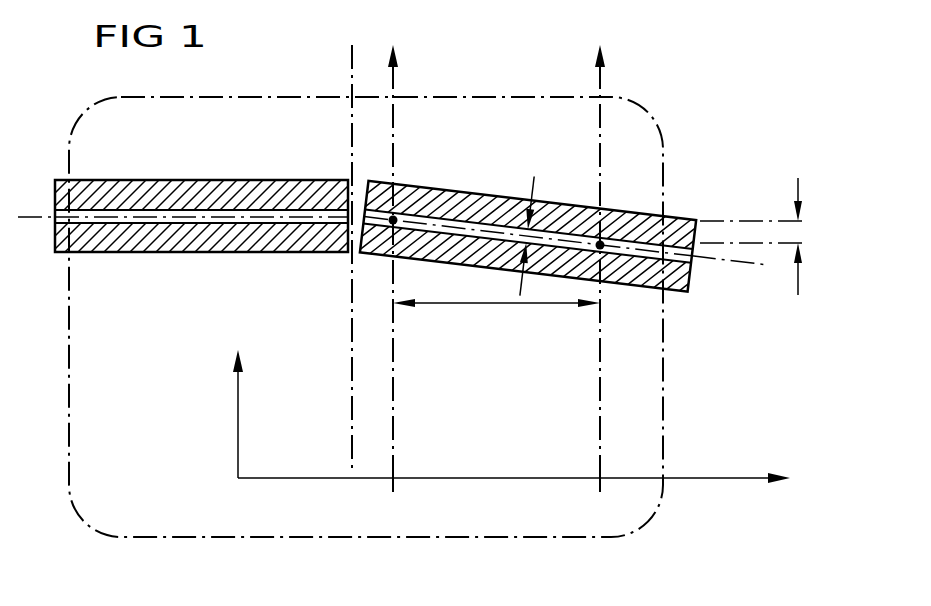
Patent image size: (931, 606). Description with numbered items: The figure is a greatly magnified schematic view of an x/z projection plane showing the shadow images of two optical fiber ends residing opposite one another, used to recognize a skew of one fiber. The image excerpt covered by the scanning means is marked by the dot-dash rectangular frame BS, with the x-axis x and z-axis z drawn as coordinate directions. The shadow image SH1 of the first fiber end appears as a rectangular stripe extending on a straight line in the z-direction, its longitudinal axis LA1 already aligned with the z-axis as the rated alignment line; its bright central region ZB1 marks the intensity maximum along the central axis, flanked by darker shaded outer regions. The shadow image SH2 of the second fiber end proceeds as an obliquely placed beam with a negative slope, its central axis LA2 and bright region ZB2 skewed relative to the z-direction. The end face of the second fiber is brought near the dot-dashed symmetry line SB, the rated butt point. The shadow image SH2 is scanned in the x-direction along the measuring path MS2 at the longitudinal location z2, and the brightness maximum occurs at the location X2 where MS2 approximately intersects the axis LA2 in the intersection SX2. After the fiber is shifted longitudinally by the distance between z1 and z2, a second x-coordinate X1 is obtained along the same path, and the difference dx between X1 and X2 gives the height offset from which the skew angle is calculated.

The rectangular frame / image excerpt BS is at (190, 537).
The symmetry line SB is at (352, 53).
The measuring path / measuring column MS2 is at (603, 80).
The shadow image of first fiber end SH1 is at (165, 195).
The shadow image of second fiber end SH2 is at (445, 195).
The region of great brightness of shadow image SH1 ZB1 is at (115, 222).
The region of great brightness of shadow image SH2 ZB2 is at (687, 268).
The longitudinal axis of first fiber end LA1 is at (30, 217).
The longitudinal axis of second fiber end LA2 is at (774, 262).
The intersection of measuring path MS2 with middle axis LA2 SX2 is at (603, 253).
The x-coordinate of longitudinal axis LA2 in second longitudinal position X1 is at (753, 221).
The x-coordinate of brightness maximum in first longitudinal position X2 is at (733, 243).
The height offset dx is at (803, 235).
The x-direction x is at (228, 414).
The z-direction z is at (523, 479).
The longitudinal location of measuring path MS2* z1 is at (393, 499).
The longitudinal location of measuring path MS2 z2 is at (602, 499).